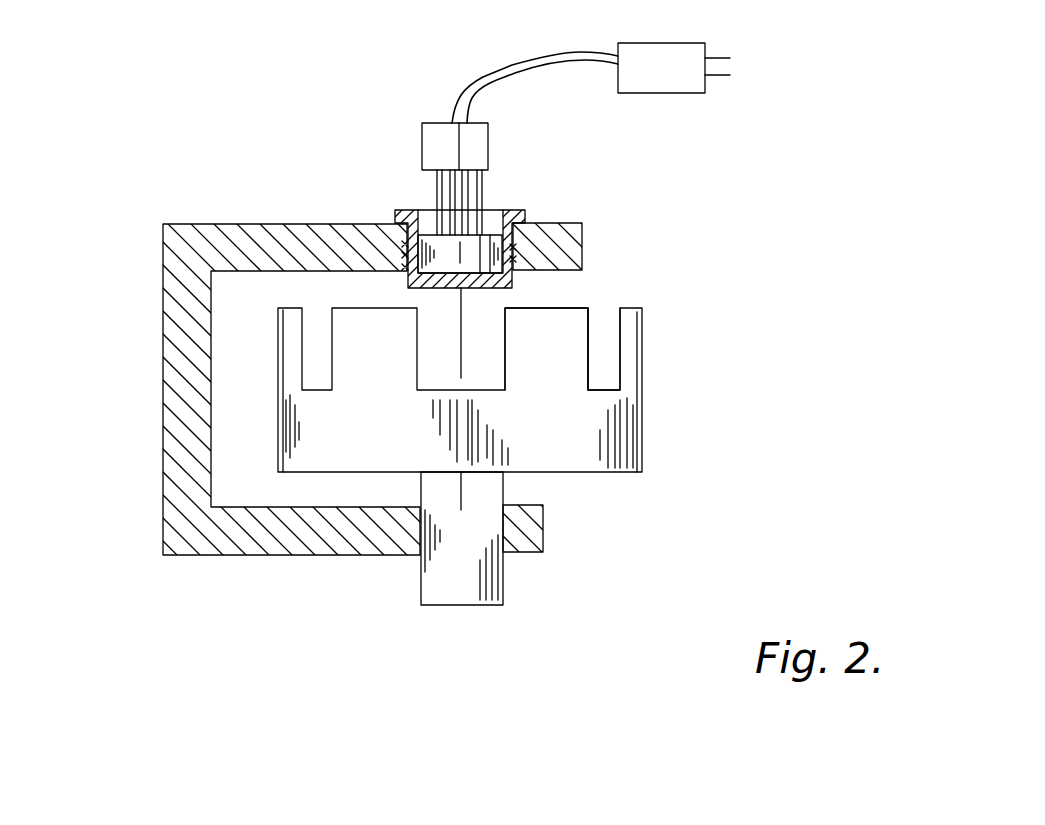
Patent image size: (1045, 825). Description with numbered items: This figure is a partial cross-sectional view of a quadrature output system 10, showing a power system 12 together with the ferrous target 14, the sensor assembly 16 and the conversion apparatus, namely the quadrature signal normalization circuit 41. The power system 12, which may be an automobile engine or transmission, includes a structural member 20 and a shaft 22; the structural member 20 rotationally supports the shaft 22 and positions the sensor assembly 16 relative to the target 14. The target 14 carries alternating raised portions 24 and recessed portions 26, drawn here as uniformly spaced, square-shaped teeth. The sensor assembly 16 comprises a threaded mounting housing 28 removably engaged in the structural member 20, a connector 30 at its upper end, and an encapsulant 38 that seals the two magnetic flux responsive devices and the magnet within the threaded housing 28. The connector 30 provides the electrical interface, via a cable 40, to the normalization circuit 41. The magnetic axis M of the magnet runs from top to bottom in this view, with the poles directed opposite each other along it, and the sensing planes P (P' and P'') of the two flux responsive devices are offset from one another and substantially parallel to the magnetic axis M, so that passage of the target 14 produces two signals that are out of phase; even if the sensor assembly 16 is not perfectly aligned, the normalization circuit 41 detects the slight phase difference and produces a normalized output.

The quadrature output system 10 is at (748, 313).
The power system 12 is at (112, 152).
The ferrous target 14 is at (642, 414).
The sensor assembly 16 is at (564, 150).
The structural member 20 is at (163, 398).
The shaft 22 is at (504, 578).
The raised portions 24 is at (580, 305).
The recessed portions 26 is at (601, 389).
The threaded mounting housing 28 is at (404, 209).
The connector 30 is at (490, 132).
The encapsulant 38 is at (428, 208).
The cable 40 is at (507, 72).
The quadrature signal normalization circuit 41 is at (686, 43).
The magnetic axis M is at (461, 342).
The sensing planes P is at (450, 0).